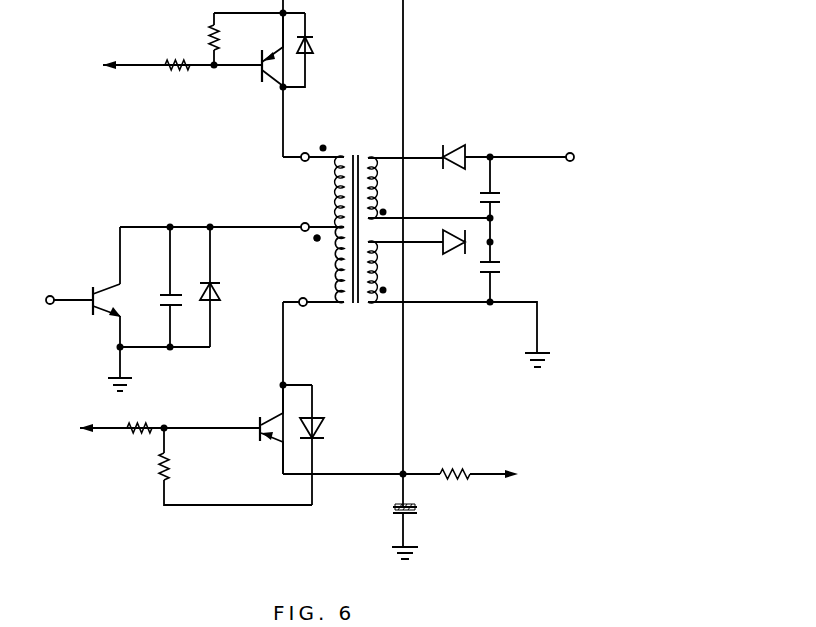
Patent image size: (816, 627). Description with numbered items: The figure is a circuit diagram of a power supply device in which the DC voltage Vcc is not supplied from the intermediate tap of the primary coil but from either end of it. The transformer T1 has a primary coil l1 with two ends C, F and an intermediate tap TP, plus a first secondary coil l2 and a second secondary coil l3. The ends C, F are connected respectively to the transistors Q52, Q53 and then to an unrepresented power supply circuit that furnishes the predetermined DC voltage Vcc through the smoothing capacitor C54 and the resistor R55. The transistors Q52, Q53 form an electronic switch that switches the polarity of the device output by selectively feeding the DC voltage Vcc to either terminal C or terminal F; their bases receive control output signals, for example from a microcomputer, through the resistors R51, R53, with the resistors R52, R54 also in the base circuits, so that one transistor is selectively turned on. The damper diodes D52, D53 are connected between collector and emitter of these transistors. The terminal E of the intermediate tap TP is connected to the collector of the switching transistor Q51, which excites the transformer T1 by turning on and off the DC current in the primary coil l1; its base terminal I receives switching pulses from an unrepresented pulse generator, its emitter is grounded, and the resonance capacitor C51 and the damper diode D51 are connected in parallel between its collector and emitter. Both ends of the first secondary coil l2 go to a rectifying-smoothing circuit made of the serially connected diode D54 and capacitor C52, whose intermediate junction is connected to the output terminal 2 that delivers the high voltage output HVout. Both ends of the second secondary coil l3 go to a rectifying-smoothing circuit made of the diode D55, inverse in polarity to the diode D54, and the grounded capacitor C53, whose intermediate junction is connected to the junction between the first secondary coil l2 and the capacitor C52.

The resistor R52 is at (208, 32).
The resistor R51 is at (179, 69).
The transistor Q52 is at (272, 76).
The damper diode D52 is at (316, 42).
The end of primary coil C is at (303, 153).
The terminal of intermediate tap E is at (301, 223).
The intermediate tap TP is at (304, 233).
The end of primary coil F is at (303, 308).
The transformer T1 is at (355, 156).
The primary coil l1 is at (338, 304).
The first secondary coil l2 is at (380, 186).
The second secondary coil l3 is at (372, 304).
The diode D54 is at (458, 146).
The diode D55 is at (450, 256).
The output terminal 2 is at (570, 154).
The high voltage output HVout is at (630, 156).
The capacitor C52 is at (503, 197).
The capacitor C53 is at (503, 266).
The switching transistor Q51 is at (108, 288).
The base terminal I is at (46, 299).
The resonance capacitor C51 is at (165, 300).
The damper diode D51 is at (218, 288).
The resistor R53 is at (144, 421).
The transistor Q53 is at (274, 413).
The damper diode D53 is at (322, 428).
The resistor R54 is at (170, 458).
The resistor R55 is at (454, 466).
The DC voltage Vcc is at (545, 474).
The smoothing capacitor C54 is at (418, 510).